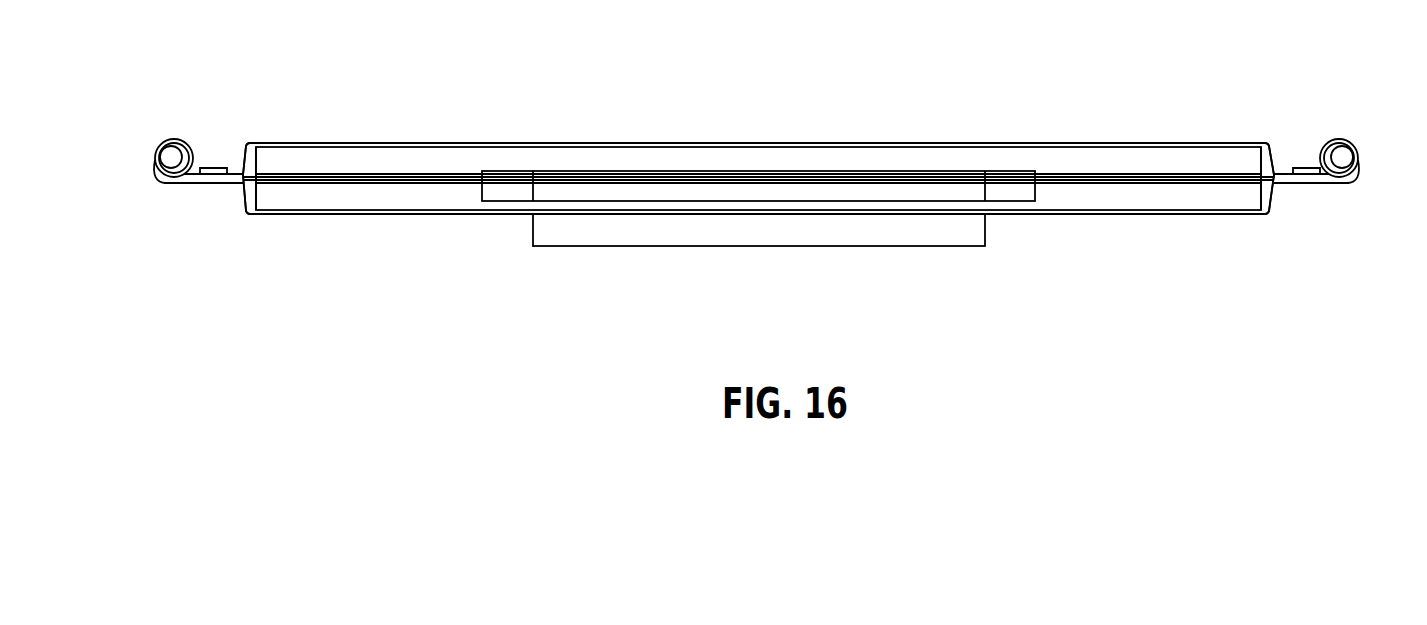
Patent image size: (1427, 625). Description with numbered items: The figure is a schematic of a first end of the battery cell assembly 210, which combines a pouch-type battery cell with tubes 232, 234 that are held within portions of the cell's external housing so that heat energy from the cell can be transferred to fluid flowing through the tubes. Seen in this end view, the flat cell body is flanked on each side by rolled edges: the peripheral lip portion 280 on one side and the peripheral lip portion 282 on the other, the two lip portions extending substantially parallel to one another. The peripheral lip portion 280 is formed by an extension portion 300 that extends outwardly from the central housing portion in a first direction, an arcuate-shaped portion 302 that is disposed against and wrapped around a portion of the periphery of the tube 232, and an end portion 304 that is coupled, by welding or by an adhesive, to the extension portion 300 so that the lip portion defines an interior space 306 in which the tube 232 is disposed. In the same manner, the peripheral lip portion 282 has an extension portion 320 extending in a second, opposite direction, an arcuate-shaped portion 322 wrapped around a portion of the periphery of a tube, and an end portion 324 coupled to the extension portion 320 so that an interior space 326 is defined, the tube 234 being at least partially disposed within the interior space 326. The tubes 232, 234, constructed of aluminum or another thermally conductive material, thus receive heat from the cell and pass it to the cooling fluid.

The battery cell assembly 210 is at (763, 106).
The tube 232 is at (157, 151).
The tube 234 is at (1334, 150).
The peripheral lip portion 280 is at (231, 184).
The peripheral lip portion 282 is at (1290, 184).
The extension portion 300 is at (192, 184).
The arcuate-shaped portion 302 is at (150, 175).
The end portion 304 is at (216, 168).
The interior space 306 is at (185, 153).
The extension portion 320 is at (1307, 184).
The arcuate-shaped portion 322 is at (1353, 182).
The end portion 324 is at (1300, 170).
The interior space 326 is at (1320, 170).